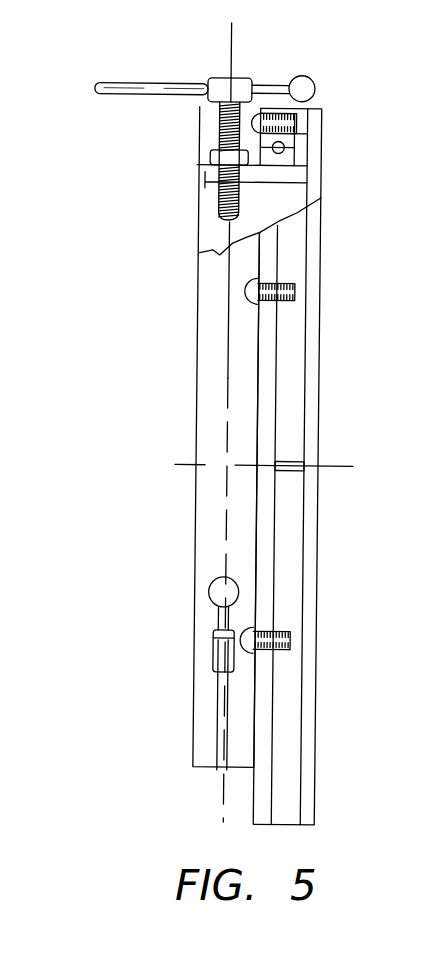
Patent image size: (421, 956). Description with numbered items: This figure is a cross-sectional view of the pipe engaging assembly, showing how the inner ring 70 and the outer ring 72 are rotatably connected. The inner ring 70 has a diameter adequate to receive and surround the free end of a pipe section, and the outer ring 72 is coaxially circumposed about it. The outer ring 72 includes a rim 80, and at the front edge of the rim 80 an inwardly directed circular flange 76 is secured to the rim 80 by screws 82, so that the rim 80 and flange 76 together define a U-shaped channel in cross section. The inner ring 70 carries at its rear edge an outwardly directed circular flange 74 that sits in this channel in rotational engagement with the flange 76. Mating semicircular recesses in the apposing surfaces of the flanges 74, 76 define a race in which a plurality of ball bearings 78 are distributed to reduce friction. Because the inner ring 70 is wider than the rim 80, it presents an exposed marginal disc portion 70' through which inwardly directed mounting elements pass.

The inner ring 70 is at (230, 480).
The exposed marginal disc portion 70' is at (216, 422).
The outer ring 72 is at (313, 108).
The outwardly directed circular flange 74 is at (297, 143).
The inwardly directed circular flange 76 is at (263, 143).
The ball bearings 78 is at (207, 153).
The rim 80 is at (314, 107).
The screws 82 is at (268, 112).